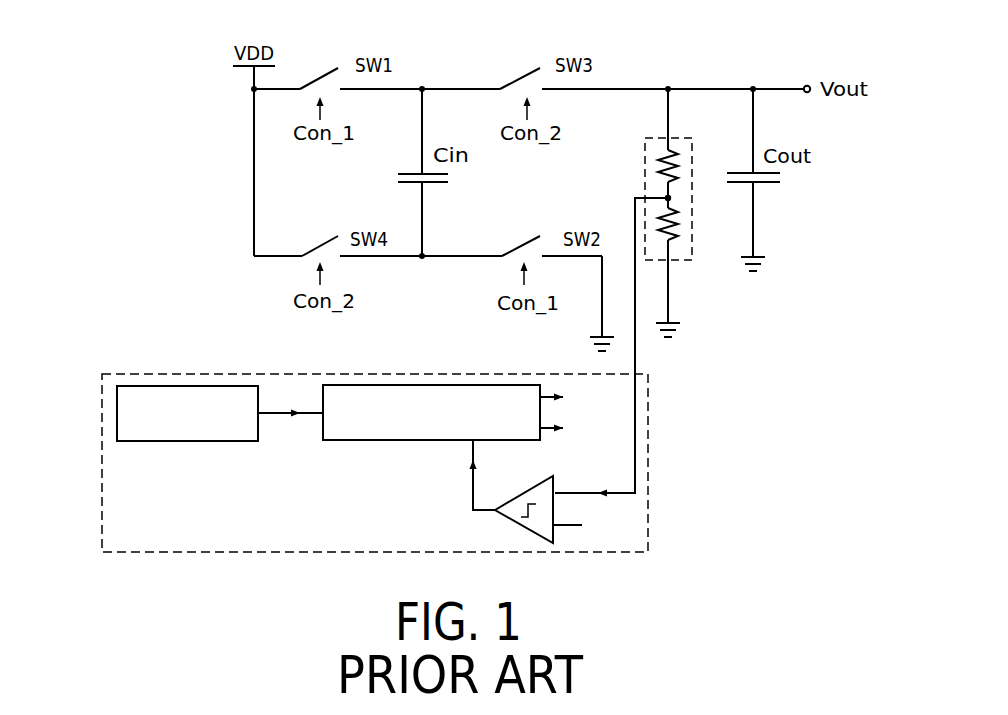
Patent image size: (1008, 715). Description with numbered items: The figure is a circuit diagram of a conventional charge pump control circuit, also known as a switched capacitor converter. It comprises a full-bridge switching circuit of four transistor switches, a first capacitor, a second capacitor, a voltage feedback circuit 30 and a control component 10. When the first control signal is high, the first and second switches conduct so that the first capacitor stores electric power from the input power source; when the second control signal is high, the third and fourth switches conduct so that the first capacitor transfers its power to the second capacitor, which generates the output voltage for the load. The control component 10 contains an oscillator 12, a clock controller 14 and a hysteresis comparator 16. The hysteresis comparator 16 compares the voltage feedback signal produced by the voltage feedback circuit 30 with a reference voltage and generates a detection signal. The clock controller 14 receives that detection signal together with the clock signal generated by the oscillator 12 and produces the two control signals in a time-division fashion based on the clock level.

The control component 10 is at (112, 487).
The oscillator 12 is at (215, 441).
The clock controller 14 is at (452, 440).
The hysteresis comparator 16 is at (503, 512).
The voltage feedback circuit 30 is at (648, 165).